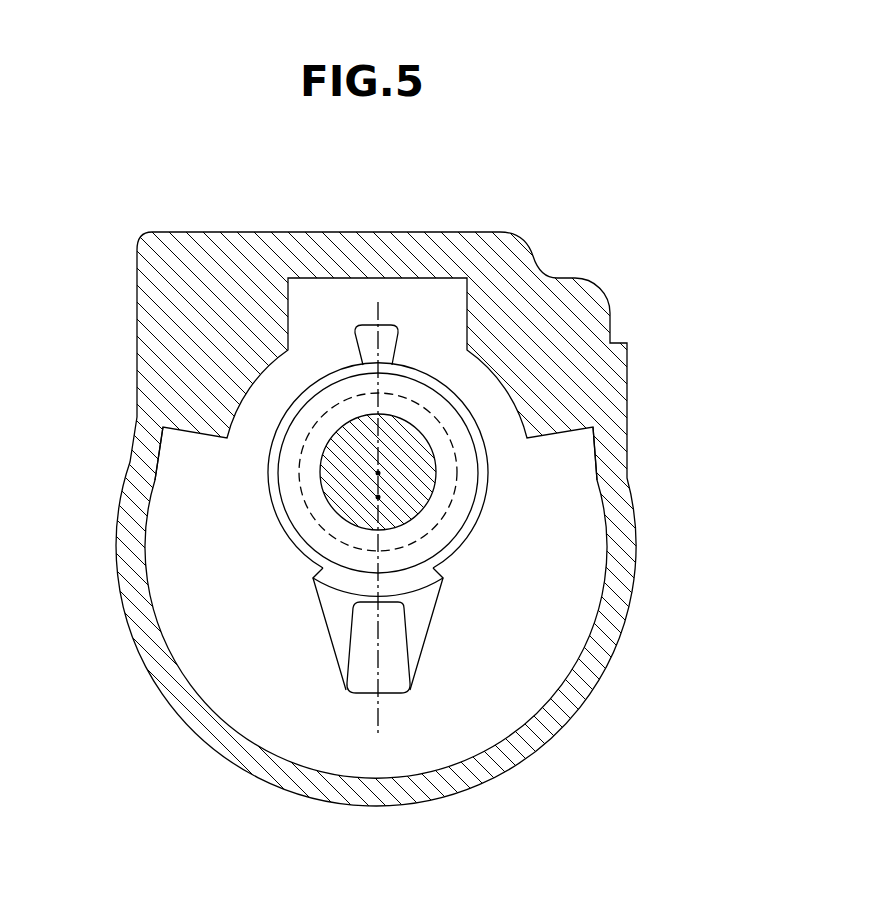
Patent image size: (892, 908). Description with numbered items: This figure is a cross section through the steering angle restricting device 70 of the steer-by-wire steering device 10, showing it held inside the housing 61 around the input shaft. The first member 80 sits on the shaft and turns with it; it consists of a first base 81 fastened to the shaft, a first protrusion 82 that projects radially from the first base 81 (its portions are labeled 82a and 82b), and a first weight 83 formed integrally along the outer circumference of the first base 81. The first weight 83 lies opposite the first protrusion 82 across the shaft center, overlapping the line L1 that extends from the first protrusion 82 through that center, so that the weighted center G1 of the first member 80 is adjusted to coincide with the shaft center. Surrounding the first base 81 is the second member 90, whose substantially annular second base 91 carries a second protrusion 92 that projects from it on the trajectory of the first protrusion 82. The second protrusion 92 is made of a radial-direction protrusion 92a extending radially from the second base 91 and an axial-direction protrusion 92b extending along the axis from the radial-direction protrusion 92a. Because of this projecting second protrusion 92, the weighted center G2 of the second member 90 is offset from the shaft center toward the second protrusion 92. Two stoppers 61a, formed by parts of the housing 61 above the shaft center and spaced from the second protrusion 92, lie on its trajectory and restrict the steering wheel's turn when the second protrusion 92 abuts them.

The steer-by-wire steering device 10 is at (110, 126).
The housing 61 is at (218, 232).
The stopper 61a is at (195, 435).
The steering angle restricting device 70 is at (268, 602).
The first member 80 is at (470, 532).
The first base 81 is at (457, 497).
The first protrusion 82 is at (448, 172).
The annular portion 82a is at (450, 413).
The upper projection 82b is at (400, 343).
The first weight 83 is at (418, 580).
The second member 90 is at (322, 638).
The second base 91 is at (490, 470).
The second protrusion 92 is at (500, 640).
The radial-direction protrusion 92a is at (415, 618).
The axial-direction protrusion 92b is at (397, 668).
The weighted center of the first member G1 is at (378, 473).
The weighted center of the second member G2 is at (378, 497).
The line L1 is at (378, 727).